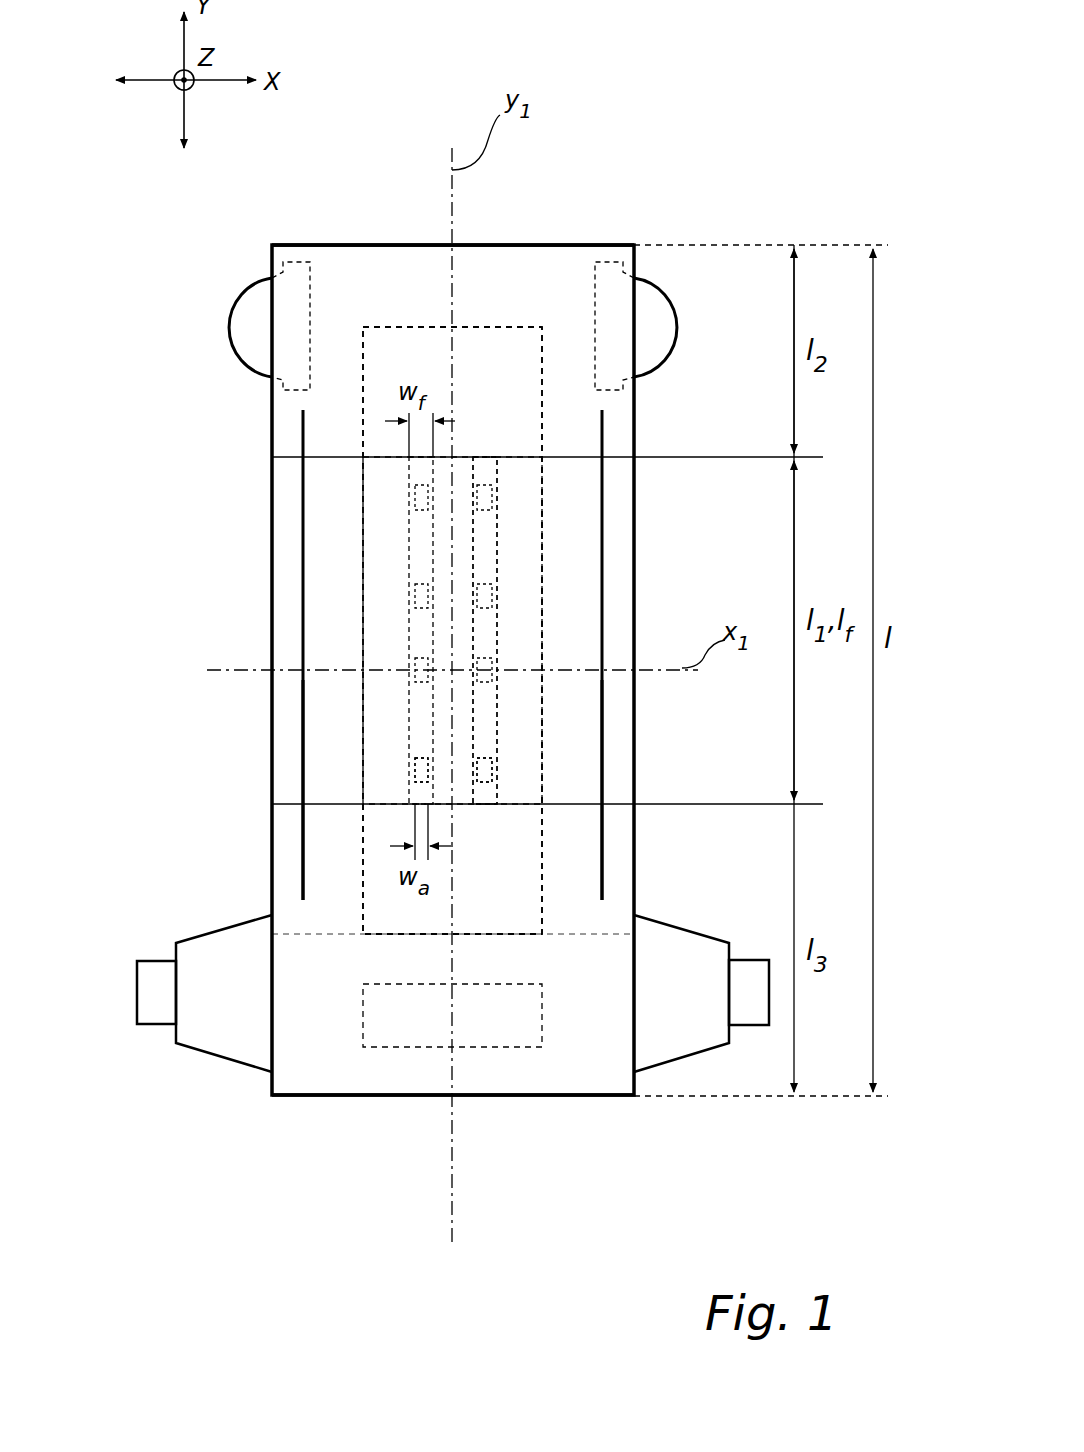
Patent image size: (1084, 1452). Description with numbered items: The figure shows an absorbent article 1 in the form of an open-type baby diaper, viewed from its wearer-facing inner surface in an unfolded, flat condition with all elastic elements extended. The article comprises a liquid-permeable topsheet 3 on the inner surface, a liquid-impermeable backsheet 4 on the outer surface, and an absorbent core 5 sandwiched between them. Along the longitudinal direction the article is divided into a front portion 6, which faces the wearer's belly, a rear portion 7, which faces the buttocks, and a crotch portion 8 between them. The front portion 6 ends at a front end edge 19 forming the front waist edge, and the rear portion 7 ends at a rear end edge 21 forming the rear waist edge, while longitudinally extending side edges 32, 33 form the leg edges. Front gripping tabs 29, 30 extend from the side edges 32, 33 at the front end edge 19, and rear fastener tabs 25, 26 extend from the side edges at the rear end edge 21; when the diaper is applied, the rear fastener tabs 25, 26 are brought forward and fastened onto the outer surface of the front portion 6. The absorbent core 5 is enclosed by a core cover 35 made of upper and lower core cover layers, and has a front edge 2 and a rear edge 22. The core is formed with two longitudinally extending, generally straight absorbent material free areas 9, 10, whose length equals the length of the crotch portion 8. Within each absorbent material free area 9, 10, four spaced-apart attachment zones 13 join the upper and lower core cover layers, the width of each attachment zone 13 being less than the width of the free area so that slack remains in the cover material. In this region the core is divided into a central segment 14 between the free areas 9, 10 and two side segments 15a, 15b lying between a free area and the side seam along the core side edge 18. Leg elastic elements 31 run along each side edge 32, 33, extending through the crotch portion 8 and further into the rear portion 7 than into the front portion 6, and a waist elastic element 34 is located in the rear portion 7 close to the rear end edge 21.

The absorbent article 1 is at (612, 195).
The front edge 2 is at (513, 561).
The topsheet 3 is at (518, 275).
The backsheet 4 is at (487, 272).
The absorbent core 5 is at (397, 345).
The front portion 6 is at (210, 265).
The rear portion 7 is at (215, 850).
The crotch portion 8 is at (215, 588).
The absorbent material free area 9 is at (415, 565).
The absorbent material free area 10 is at (495, 565).
The attachment zones 13 is at (415, 770).
The central segment 14 is at (470, 625).
The side segment 15a is at (380, 525).
The side segment 15b is at (527, 530).
The side edge 18 is at (355, 628).
The front end edge 19 is at (420, 245).
The rear end edge 21 is at (347, 1095).
The rear edge 22 is at (513, 935).
The rear fastener tab 25 is at (157, 1000).
The rear fastener tab 26 is at (747, 1007).
The front gripping tab 29 is at (243, 325).
The front gripping tab 30 is at (660, 333).
The leg elastic elements 31 is at (300, 420).
The side edge 32 is at (270, 698).
The side edge 33 is at (636, 708).
The waist elastic element 34 is at (490, 1028).
The core cover 35 is at (510, 888).